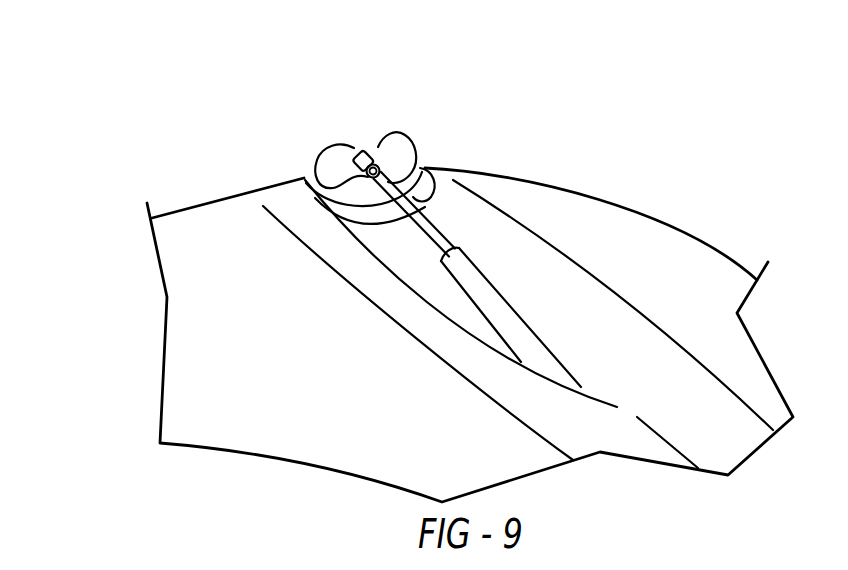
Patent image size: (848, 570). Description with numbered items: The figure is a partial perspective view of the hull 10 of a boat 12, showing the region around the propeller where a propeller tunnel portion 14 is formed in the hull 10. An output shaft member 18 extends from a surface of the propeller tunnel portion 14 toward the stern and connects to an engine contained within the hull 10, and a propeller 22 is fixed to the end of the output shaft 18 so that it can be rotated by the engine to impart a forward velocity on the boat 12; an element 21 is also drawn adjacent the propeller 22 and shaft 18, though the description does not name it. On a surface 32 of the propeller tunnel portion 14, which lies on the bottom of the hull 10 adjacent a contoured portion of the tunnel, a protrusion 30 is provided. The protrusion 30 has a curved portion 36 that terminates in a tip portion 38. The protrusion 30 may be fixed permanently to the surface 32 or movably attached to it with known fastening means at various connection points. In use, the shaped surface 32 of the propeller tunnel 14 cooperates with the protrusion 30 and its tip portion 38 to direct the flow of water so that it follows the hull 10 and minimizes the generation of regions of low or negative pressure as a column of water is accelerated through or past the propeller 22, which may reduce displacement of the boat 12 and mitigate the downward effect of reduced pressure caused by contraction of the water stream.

The hull 10 is at (227, 388).
The boat 12 is at (698, 218).
The propeller tunnel portion 14 is at (505, 254).
The output shaft member 18 is at (527, 352).
The clamp lobes 21 is at (397, 142).
The propeller 22 is at (364, 137).
The protrusion 30 is at (422, 194).
The surface 32 is at (418, 267).
The curved portion 36 is at (418, 192).
The tip portion 38 is at (310, 183).